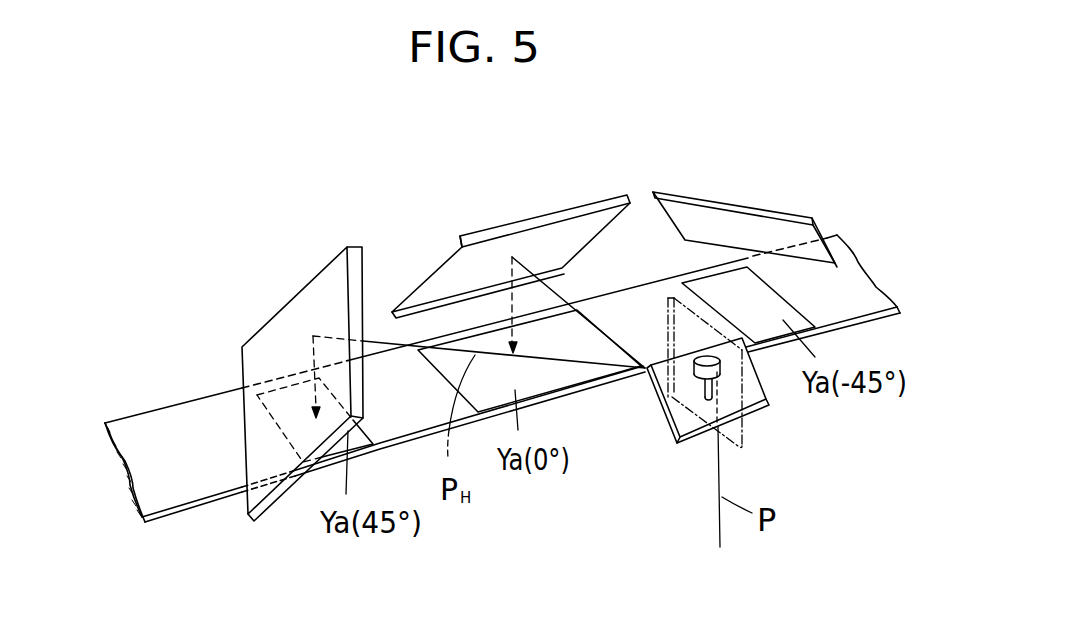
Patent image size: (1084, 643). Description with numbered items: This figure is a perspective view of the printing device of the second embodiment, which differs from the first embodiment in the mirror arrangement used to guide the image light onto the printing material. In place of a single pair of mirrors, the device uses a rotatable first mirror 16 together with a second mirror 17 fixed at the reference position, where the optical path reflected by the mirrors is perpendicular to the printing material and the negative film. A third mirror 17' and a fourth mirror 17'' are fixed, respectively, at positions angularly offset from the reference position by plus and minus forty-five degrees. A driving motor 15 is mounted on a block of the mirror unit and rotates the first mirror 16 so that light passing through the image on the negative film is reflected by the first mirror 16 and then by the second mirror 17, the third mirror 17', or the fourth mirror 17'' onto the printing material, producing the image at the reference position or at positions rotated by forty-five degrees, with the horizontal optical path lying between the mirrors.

The driving motor 15 is at (760, 417).
The first mirror 16 is at (676, 415).
The second mirror 17 is at (511, 236).
The third mirror 17' is at (307, 365).
The fourth mirror 17'' is at (745, 207).